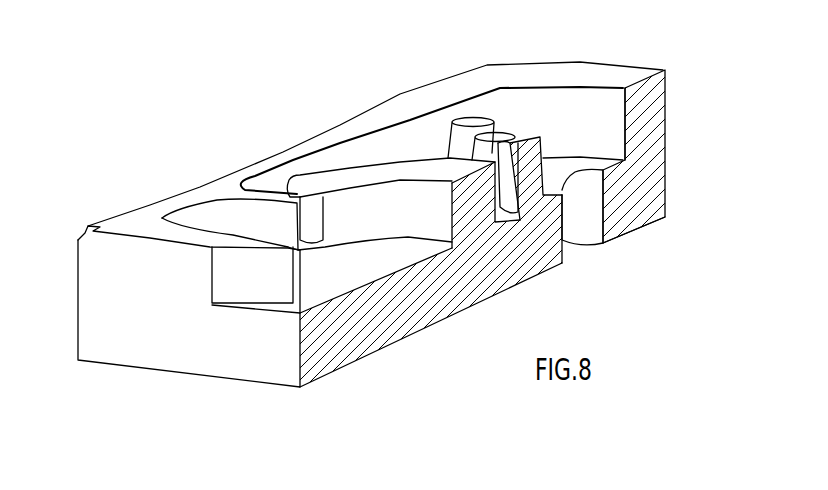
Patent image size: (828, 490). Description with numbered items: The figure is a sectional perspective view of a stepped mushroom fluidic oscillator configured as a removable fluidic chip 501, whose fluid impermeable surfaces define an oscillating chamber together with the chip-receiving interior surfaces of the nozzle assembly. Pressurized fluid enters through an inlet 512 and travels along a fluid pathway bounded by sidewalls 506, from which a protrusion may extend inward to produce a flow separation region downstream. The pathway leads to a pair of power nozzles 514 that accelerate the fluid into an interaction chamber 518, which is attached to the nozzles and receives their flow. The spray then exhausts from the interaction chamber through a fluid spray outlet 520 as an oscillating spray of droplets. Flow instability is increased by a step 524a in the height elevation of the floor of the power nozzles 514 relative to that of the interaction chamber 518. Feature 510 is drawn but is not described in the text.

The removable fluidic chip 501 is at (226, 93).
The sidewall 506 is at (338, 150).
The locating pins 510 is at (407, 143).
The power nozzles 514 is at (247, 182).
The fluid spray outlet 520 is at (520, 140).
The inlet 512 is at (583, 218).
The interaction chamber 518 is at (423, 220).
The step 524a is at (425, 220).